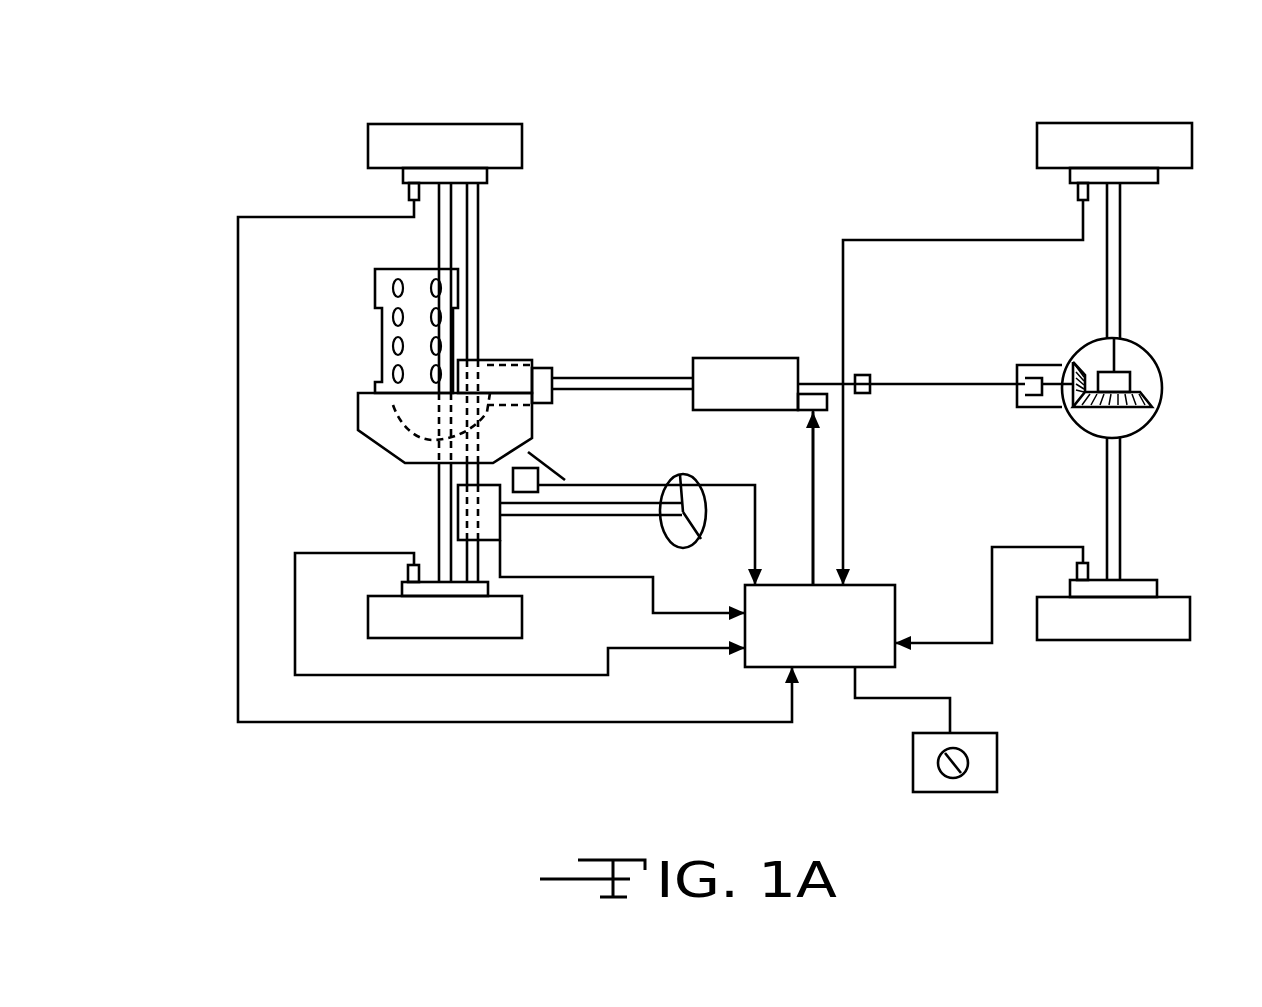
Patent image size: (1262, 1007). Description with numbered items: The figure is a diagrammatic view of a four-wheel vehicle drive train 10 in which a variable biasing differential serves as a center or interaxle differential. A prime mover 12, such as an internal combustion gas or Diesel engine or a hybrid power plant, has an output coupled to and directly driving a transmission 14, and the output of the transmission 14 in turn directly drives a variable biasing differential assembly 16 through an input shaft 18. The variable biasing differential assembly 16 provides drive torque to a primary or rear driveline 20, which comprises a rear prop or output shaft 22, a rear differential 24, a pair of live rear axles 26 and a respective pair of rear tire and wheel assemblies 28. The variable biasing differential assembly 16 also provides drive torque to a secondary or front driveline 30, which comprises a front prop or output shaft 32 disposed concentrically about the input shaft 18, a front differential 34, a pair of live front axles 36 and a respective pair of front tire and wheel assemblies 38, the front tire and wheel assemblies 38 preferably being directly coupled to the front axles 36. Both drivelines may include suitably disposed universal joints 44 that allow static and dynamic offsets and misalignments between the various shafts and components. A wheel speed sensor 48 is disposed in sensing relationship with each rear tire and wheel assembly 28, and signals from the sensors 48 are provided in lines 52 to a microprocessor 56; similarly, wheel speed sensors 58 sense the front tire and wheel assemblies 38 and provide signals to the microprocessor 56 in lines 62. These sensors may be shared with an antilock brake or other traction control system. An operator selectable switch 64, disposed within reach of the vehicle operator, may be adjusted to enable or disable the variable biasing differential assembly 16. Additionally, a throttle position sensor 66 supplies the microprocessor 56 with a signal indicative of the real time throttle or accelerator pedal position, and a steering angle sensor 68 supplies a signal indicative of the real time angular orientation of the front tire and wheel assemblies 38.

The four-wheel vehicle drive train 10 is at (760, 150).
The prime mover 12 is at (378, 285).
The transmission 14 is at (362, 424).
The variable biasing differential assembly 16 is at (752, 357).
The input shaft 18 is at (626, 377).
The primary or rear driveline 20 is at (1005, 145).
The primary or rear prop or output shaft 22 is at (825, 383).
The primary or rear differential 24 is at (1162, 372).
The live primary or rear axles 26 is at (1115, 275).
The primary or rear tire and wheel assemblies 28 is at (1115, 123).
The secondary or front driveline 30 is at (555, 203).
The secondary or front prop or output shaft 32 is at (667, 397).
The secondary or front differential 34 is at (413, 440).
The live secondary or front axles 36 is at (438, 245).
The secondary or front tire and wheel assemblies 38 is at (445, 123).
The universal joints 44 is at (870, 393).
The wheel speed sensor 48 is at (1080, 190).
The lines 52 is at (940, 242).
The microprocessor 56 is at (835, 669).
The wheel speed sensors 58 is at (409, 195).
The lines 62 is at (235, 357).
The operator selectable switch 64 is at (1002, 755).
The throttle position sensor 66 is at (520, 464).
The steering angle sensor 68 is at (502, 527).